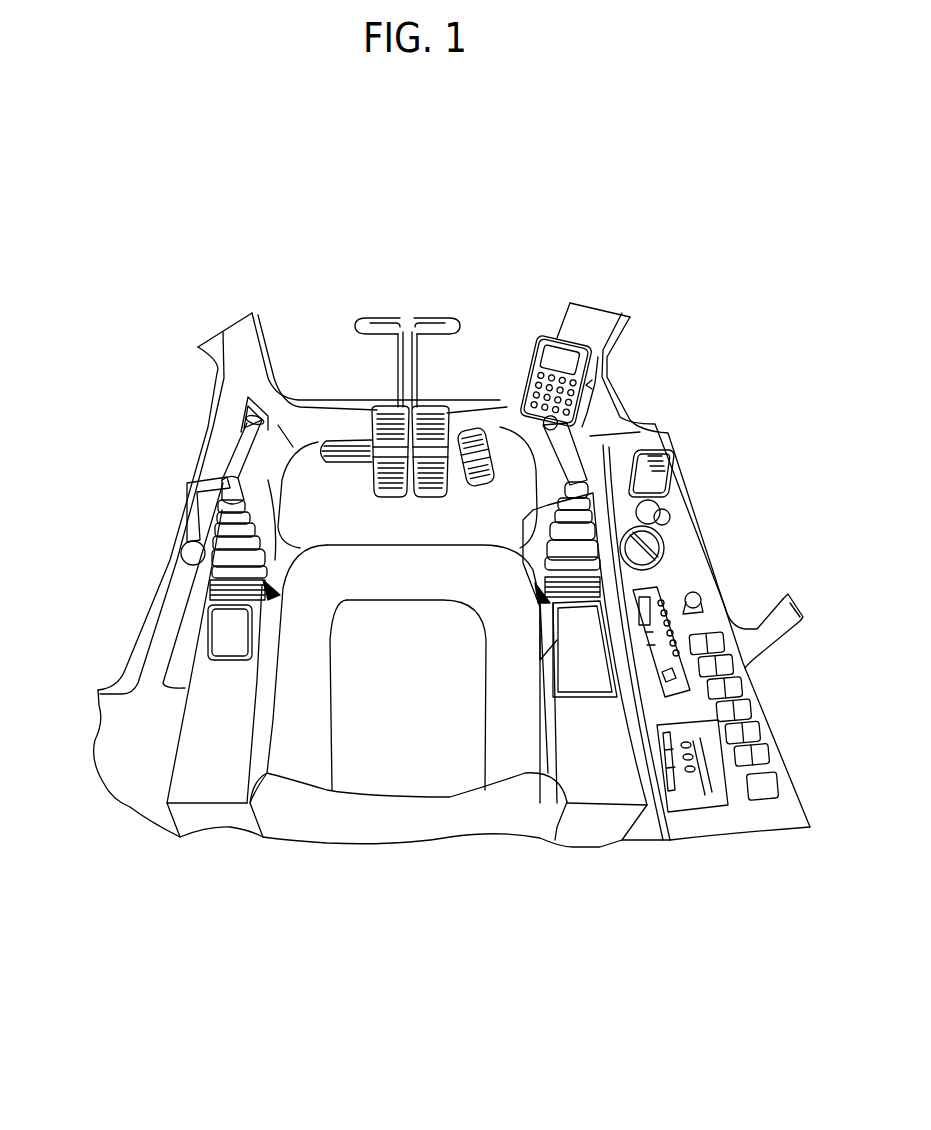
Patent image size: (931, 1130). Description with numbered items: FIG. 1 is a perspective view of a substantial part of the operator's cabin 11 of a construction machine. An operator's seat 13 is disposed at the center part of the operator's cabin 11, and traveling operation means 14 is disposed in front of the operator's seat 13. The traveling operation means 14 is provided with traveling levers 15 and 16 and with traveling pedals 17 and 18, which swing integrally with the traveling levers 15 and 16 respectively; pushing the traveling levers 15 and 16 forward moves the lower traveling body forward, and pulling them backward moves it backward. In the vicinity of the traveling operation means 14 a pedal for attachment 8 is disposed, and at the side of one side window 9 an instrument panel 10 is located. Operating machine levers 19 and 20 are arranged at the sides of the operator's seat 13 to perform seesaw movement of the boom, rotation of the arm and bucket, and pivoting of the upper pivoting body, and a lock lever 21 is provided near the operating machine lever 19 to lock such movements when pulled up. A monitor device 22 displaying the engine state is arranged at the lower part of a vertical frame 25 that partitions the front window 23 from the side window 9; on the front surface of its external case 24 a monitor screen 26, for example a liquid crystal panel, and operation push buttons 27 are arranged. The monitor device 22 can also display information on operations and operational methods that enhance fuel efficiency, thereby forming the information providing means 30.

The pedal for attachment 8 is at (478, 428).
The side window 9 is at (737, 499).
The instrument panel 10 is at (697, 570).
The operator's cabin 11 is at (679, 326).
The operator's seat 13 is at (362, 776).
The traveling operation means 14 is at (412, 306).
The traveling lever 15 is at (380, 320).
The traveling lever 16 is at (447, 320).
The traveling pedal 17 is at (393, 482).
The traveling pedal 18 is at (438, 482).
The operating machine lever 19 is at (237, 446).
The operating machine lever 20 is at (592, 438).
The lock lever 21 is at (180, 514).
The monitor device 22 is at (539, 334).
The front window 23 is at (298, 344).
The external case 24 is at (590, 385).
The vertical frame 25 is at (600, 318).
The monitor screen 26 is at (607, 362).
The operation push buttons 27 is at (527, 382).
The information providing means 30 is at (580, 298).